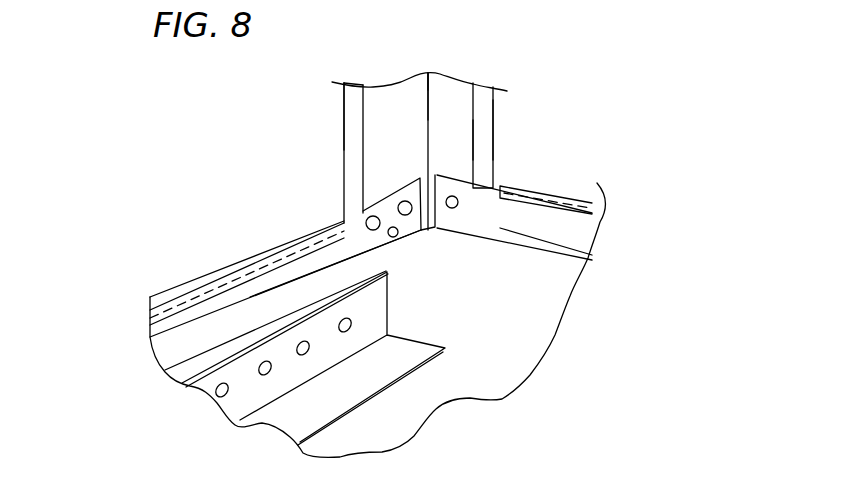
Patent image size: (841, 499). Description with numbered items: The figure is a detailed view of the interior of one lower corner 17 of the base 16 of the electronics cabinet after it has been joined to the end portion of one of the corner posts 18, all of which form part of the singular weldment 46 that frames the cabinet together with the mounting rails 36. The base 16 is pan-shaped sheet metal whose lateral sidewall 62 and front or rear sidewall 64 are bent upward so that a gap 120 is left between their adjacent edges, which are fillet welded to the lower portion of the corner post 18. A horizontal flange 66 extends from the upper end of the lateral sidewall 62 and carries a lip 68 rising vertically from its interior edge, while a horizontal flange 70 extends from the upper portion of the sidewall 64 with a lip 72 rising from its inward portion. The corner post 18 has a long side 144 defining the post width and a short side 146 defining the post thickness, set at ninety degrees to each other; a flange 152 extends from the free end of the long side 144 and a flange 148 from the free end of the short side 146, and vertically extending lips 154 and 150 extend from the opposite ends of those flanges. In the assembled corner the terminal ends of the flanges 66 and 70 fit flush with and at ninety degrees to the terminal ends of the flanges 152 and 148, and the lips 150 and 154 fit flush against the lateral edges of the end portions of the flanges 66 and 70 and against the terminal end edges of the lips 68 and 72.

The base 16 is at (537, 308).
The corner 17 is at (508, 115).
The corner post 18 is at (330, 110).
The mounting rail 36 is at (384, 317).
The weldment 46 is at (622, 105).
The lateral sidewall 62 is at (598, 235).
The front and rear sidewall 64 is at (235, 302).
The flange 66 is at (578, 209).
The lip 68 is at (512, 185).
The flange 70 is at (292, 256).
The lip 72 is at (257, 262).
The gap 120 is at (433, 212).
The long side 144 is at (395, 90).
The short side 146 is at (453, 82).
The flange 148 is at (478, 82).
The lip 150 is at (490, 138).
The flange 152 is at (355, 88).
The lip 154 is at (350, 144).